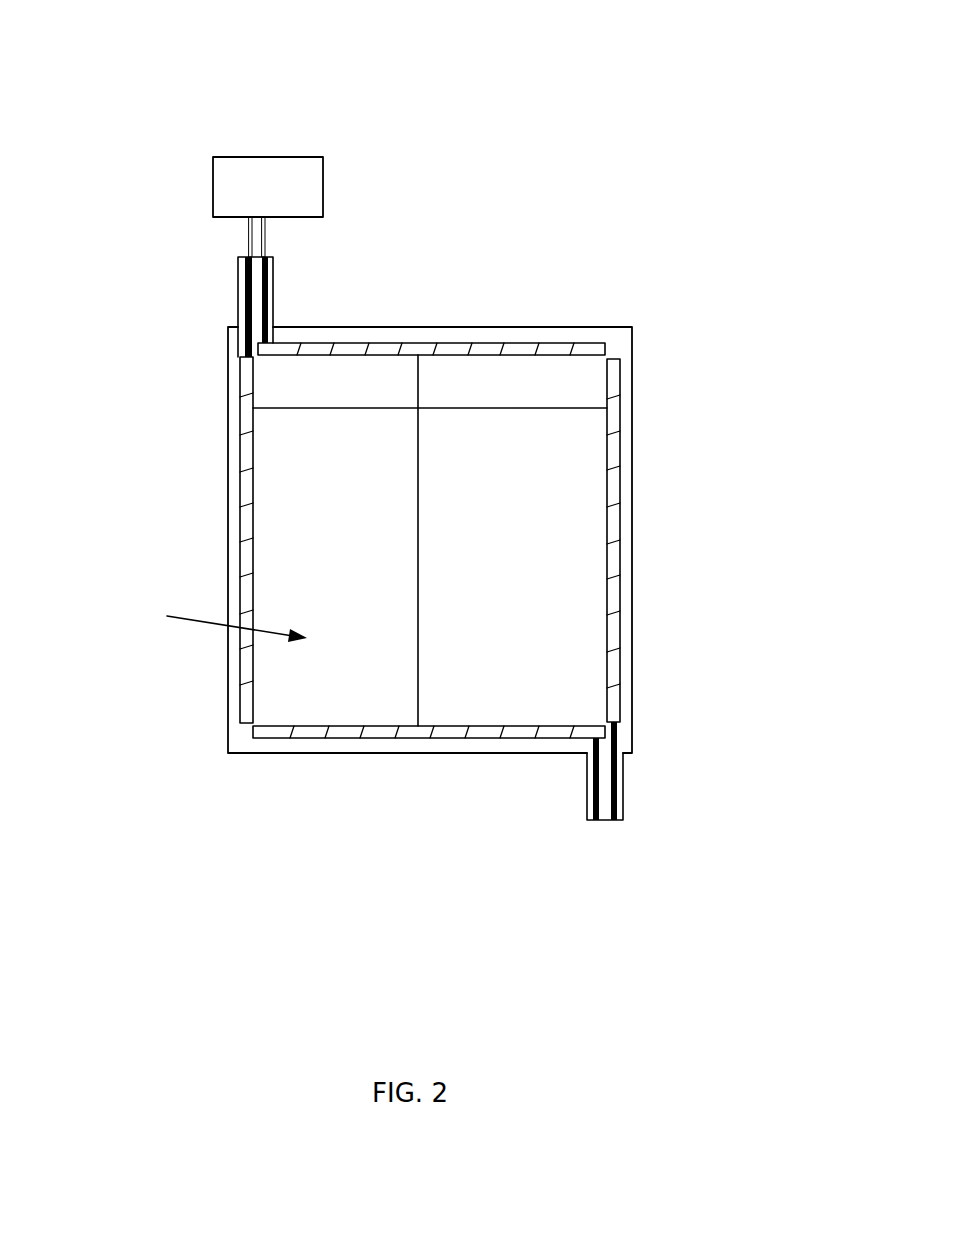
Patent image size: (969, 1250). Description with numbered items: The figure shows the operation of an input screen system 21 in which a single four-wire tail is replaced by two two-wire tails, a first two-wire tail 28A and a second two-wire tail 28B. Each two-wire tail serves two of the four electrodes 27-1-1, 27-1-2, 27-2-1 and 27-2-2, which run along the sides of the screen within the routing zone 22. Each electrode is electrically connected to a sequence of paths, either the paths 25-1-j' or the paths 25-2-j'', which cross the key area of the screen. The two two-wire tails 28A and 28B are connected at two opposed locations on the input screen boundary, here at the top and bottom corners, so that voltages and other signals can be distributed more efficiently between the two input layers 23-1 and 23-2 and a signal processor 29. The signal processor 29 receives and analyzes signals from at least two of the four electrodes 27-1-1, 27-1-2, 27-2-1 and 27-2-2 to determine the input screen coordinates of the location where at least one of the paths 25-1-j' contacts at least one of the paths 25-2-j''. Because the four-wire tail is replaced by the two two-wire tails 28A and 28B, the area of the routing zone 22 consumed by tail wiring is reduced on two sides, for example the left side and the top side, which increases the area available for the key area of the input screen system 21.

The input screen system 21 is at (143, 85).
The routing zone 22 is at (429, 537).
The signal processor 29 is at (219, 183).
The first two-wire tail 28A is at (320, 287).
The second two-wire tail 28B is at (712, 794).
The electrode 27-1-1 is at (167, 540).
The electrode 27-1-2 is at (692, 540).
The electrode 27-2-1 is at (434, 314).
The electrode 27-2-2 is at (402, 768).
The input layer 23-1 is at (444, 540).
The input layer 23-2 is at (444, 540).
The path 25-1-j' is at (430, 437).
The path 25-2-j'' is at (488, 540).